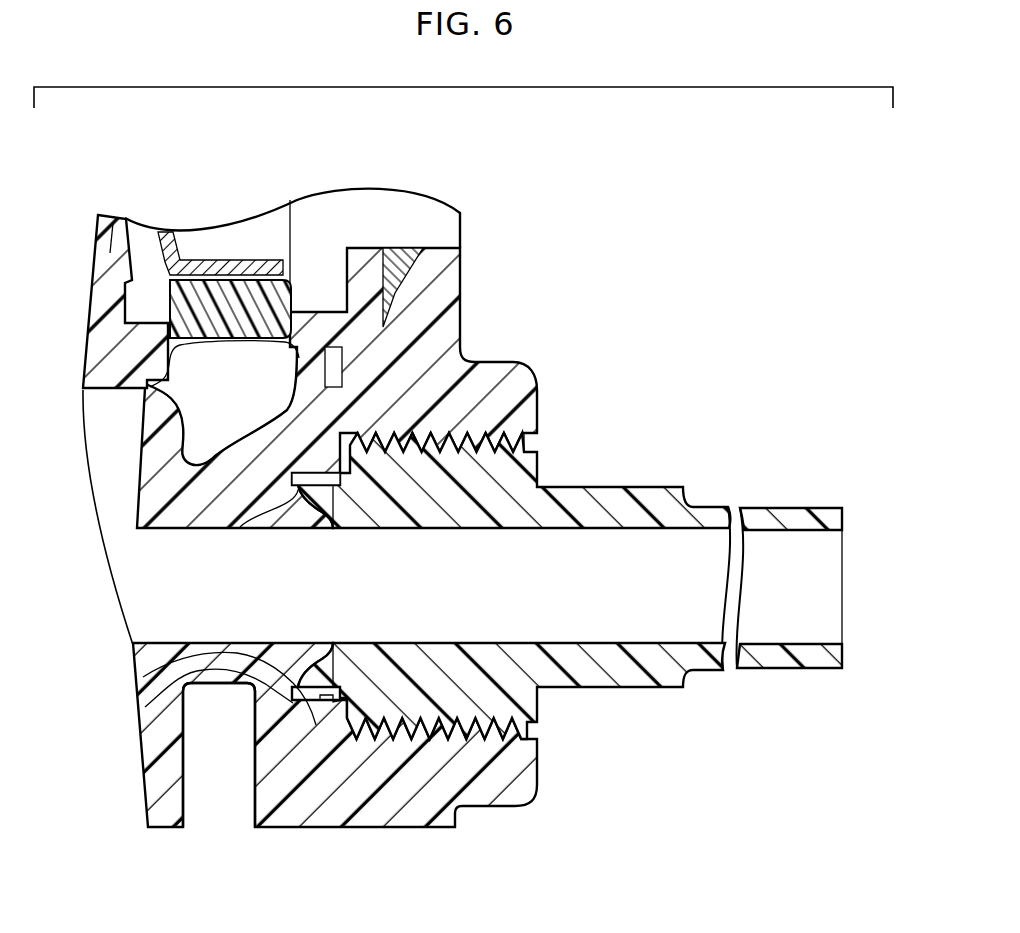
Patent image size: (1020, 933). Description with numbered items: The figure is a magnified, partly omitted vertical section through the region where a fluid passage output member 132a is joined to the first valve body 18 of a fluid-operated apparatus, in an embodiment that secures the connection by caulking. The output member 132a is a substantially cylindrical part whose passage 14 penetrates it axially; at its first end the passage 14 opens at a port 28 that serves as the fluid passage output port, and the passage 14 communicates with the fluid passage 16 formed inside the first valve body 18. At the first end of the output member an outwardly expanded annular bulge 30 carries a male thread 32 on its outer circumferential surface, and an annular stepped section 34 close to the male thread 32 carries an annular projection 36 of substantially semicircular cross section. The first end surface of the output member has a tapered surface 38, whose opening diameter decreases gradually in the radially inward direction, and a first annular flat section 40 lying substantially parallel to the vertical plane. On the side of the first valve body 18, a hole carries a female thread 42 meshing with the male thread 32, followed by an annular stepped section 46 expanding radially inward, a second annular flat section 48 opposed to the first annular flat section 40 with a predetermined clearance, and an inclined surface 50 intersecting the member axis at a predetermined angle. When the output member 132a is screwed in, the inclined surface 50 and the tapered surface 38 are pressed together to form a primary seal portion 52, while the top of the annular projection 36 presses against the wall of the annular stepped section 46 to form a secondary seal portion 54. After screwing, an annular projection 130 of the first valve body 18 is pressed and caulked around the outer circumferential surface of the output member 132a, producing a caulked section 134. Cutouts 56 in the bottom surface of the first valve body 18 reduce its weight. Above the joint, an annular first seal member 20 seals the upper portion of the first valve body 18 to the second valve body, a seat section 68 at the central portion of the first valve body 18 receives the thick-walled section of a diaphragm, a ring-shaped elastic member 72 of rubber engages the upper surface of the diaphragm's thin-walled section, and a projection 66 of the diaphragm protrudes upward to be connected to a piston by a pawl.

The passage 14 is at (612, 640).
The fluid passage 16 is at (180, 574).
The first valve body 18 is at (381, 803).
The annular first seal member 20 is at (400, 263).
The port 28 is at (838, 641).
The annular bulge 30 is at (493, 700).
The male thread 32 is at (387, 733).
The annular stepped section 34 is at (343, 697).
The annular projection 36 is at (317, 705).
The tapered surface 38 is at (143, 677).
The first annular flat section 40 is at (145, 707).
The female thread 42 is at (423, 442).
The annular stepped section 46 is at (343, 452).
The second annular flat section 48 is at (240, 527).
The inclined surface 50 is at (330, 503).
The primary seal portion 52 is at (316, 693).
The secondary seal portion 54 is at (312, 473).
The cutouts 56 is at (188, 808).
The projection 66 is at (117, 218).
The seat section 68 is at (153, 385).
The ring-shaped elastic member 72 is at (230, 293).
The annular projection 130 is at (535, 450).
The fluid passage output member 132a is at (641, 478).
The caulked section 134 is at (547, 731).